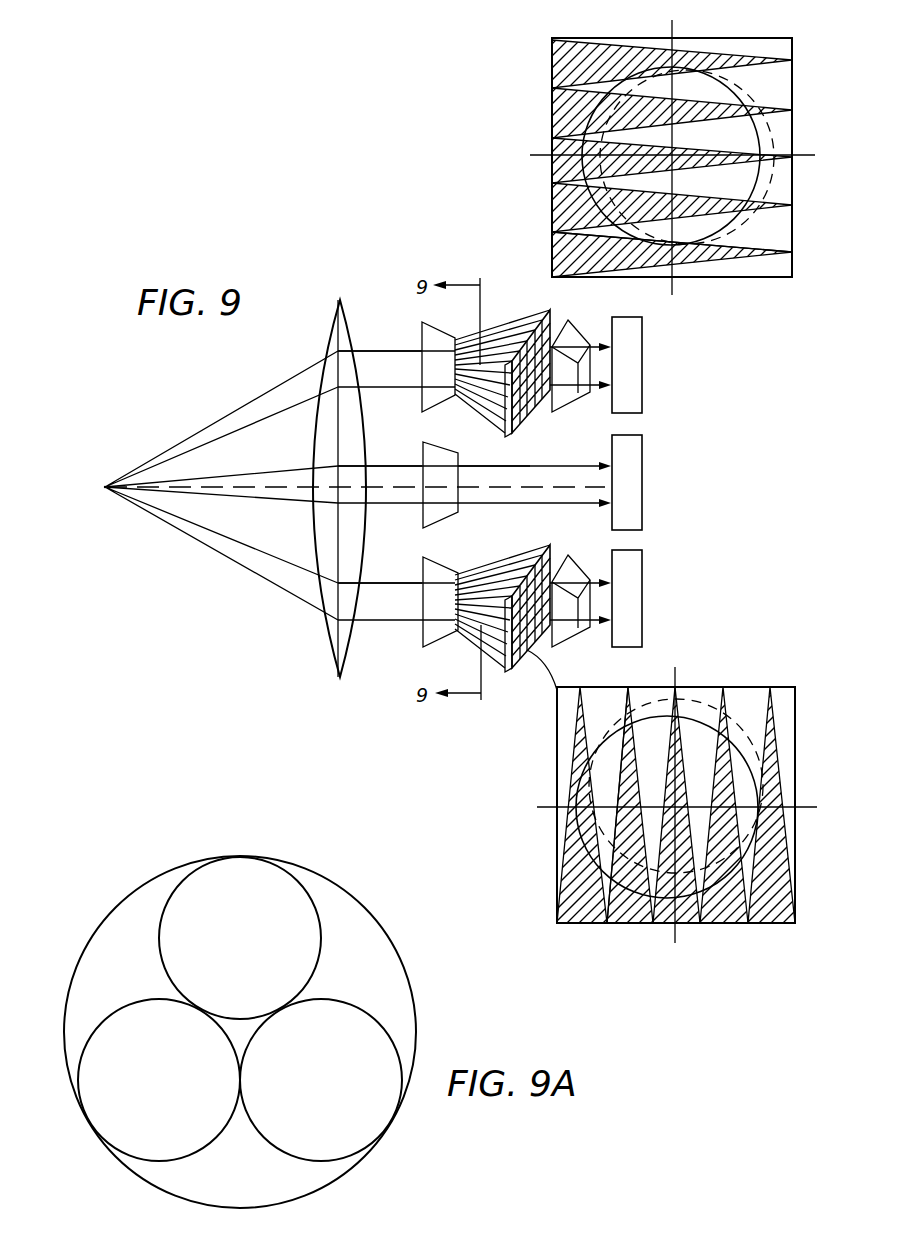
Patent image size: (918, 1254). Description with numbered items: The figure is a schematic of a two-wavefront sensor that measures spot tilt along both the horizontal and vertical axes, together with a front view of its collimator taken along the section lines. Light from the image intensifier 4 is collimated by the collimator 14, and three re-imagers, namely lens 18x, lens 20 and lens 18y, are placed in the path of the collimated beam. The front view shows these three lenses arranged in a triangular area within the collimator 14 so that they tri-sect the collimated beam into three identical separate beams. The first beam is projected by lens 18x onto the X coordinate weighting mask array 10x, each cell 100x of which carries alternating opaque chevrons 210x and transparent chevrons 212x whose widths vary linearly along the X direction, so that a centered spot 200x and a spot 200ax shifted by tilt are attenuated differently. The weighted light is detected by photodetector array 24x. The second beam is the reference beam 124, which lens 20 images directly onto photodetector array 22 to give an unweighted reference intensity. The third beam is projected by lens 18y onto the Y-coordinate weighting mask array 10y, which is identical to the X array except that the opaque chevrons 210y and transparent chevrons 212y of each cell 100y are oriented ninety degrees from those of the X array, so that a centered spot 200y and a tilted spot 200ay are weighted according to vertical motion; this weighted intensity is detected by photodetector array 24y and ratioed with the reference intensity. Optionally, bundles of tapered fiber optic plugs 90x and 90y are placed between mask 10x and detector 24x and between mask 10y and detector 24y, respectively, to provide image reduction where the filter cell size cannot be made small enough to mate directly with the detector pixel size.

In FIG. 9, the image intensifier 4 is at (103, 490).
In FIG. 9, the collimator 14 is at (325, 632).
In FIG. 9A, the collimator 14 is at (415, 1031).
In FIG. 9, the re-imager lens 18x is at (433, 333).
In FIG. 9A, the re-imager lens 18x is at (240, 938).
In FIG. 9, the re-imager lens 20 is at (456, 453).
In FIG. 9A, the re-imager lens 20 is at (159, 1080).
In FIG. 9, the re-imager lens 18y is at (450, 568).
In FIG. 9A, the re-imager lens 18y is at (321, 1080).
In FIG. 9, the X coordinate weighting mask array 10x is at (622, 277).
In FIG. 9, the Y-coordinate weighting mask array 10y is at (552, 546).
In FIG. 9, the tapered fiber optic plug bundle 90x is at (553, 405).
In FIG. 9, the tapered fiber optic plug bundle 90y is at (562, 640).
In FIG. 9, the photodetector array 24x is at (643, 398).
In FIG. 9, the photodetector array 22 is at (643, 500).
In FIG. 9, the photodetector array 24y is at (643, 625).
In FIG. 9, the reference beam 124 is at (523, 465).
In FIG. 9, the mask cell 100x is at (618, 173).
In FIG. 9, the mask cell 100y is at (622, 796).
In FIG. 9, the opaque chevron 210x is at (552, 66).
In FIG. 9, the opaque chevron 210y is at (568, 868).
In FIG. 9, the subaperture spot 200x is at (588, 101).
In FIG. 9, the subaperture spot 200y is at (593, 753).
In FIG. 9, the shifted subaperture spot 200ax is at (740, 250).
In FIG. 9, the shifted subaperture spot 200ay is at (747, 716).
In FIG. 9, the transparent chevron 212x is at (771, 237).
In FIG. 9, the transparent chevron 212y is at (605, 822).